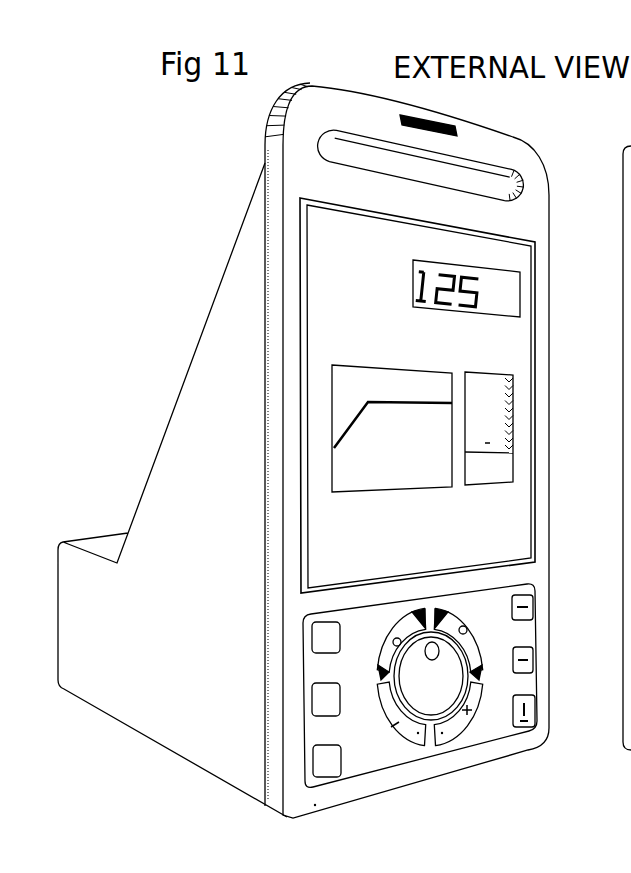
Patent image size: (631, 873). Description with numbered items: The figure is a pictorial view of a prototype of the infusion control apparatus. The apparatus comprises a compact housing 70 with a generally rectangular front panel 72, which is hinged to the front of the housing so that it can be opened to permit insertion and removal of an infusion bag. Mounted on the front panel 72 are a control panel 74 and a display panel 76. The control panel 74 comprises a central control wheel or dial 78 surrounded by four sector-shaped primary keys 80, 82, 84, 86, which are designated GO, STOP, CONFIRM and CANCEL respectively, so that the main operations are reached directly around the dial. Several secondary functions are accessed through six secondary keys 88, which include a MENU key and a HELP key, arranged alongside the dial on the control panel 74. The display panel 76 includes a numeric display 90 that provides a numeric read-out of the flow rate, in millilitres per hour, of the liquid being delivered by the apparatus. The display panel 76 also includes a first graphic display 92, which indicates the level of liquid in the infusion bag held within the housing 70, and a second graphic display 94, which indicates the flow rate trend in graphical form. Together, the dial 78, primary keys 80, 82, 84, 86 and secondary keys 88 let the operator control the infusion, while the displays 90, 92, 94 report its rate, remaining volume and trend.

The housing 70 is at (177, 730).
The front panel 72 is at (445, 763).
The control panel 74 is at (360, 758).
The display panel 76 is at (337, 290).
The control wheel or dial 78 is at (450, 677).
The primary key 80 is at (413, 620).
The primary key 82 is at (452, 613).
The primary key 84 is at (413, 740).
The primary key 86 is at (462, 725).
The secondary keys 88 is at (317, 690).
The numeric display 90 is at (500, 272).
The first graphic display 92 is at (498, 417).
The second graphic display 94 is at (340, 405).